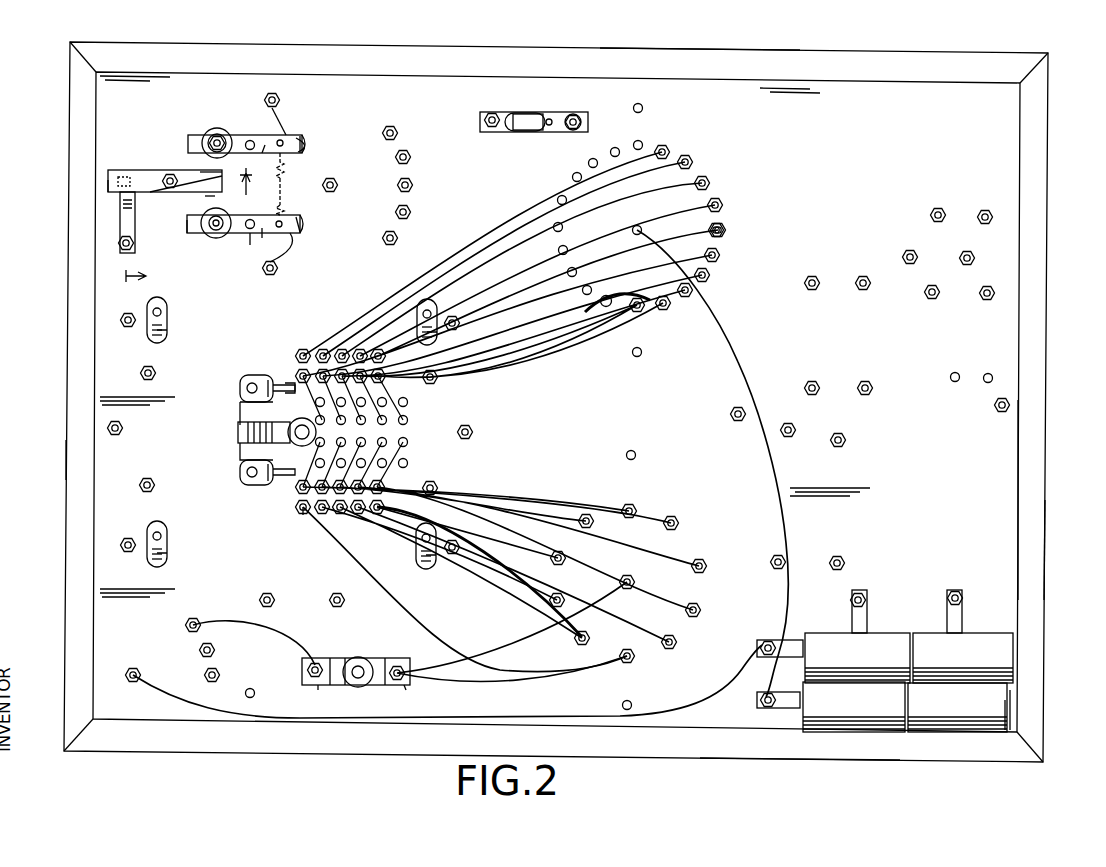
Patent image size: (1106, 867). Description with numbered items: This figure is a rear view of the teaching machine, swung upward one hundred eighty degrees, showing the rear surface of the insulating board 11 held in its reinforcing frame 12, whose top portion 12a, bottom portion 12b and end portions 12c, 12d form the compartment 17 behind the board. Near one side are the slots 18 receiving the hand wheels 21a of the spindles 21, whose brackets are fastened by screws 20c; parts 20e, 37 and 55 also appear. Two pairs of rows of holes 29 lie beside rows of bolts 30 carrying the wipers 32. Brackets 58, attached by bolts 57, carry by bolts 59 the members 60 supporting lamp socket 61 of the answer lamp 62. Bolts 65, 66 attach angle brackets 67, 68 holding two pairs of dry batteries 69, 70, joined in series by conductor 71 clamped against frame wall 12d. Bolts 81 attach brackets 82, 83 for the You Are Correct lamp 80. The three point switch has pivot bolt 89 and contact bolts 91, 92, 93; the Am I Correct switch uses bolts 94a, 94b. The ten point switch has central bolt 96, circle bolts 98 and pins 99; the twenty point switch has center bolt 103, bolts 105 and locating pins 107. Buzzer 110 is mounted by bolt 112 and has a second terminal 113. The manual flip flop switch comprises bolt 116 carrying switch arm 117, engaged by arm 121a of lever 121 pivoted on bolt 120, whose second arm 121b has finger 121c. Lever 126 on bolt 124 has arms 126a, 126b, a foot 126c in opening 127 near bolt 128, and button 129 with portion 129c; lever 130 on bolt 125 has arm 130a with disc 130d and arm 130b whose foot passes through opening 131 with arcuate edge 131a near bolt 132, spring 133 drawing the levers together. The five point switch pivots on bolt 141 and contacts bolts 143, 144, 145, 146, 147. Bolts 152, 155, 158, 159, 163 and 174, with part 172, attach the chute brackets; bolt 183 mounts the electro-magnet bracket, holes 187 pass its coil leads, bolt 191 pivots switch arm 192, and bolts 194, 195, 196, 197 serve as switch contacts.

The board 11 is at (1000, 512).
The reinforcing frame 12 is at (55, 315).
The top portion 12a is at (827, 753).
The bottom portion 12b is at (703, 58).
The end portion 12c is at (63, 456).
The end portion 12d is at (1023, 549).
The compartment 17 is at (197, 228).
The slots 18 is at (163, 315).
The screws 20c is at (128, 328).
The nut 20e is at (459, 320).
The spindle 21 is at (295, 341).
The hand wheels 21a is at (168, 334).
The holes 29 is at (408, 418).
The bolts 30 is at (300, 512).
The wipers 32 is at (420, 452).
The nut 37 is at (156, 372).
The nut 55 is at (122, 428).
The bolts 57 is at (250, 490).
The brackets 58 is at (266, 375).
The bolts 59 is at (287, 380).
The members 60 is at (240, 408).
The lamp socket 61 is at (240, 447).
The lamp 62 is at (295, 420).
The bolts 65 is at (866, 597).
The bolts 66 is at (762, 640).
The angle-shaped brackets 67 is at (868, 618).
The angle-shaped brackets 68 is at (790, 640).
The dry batteries 69 is at (875, 670).
The dry batteries 70 is at (872, 720).
The conductor 71 is at (1015, 683).
The lamp 80 is at (370, 648).
The bolts 81 is at (316, 662).
The bracket 82 is at (317, 686).
The bracket 83 is at (404, 686).
The bolt 89 is at (134, 668).
The bolt 91 is at (196, 618).
The bolt 92 is at (214, 650).
The bolt 93 is at (219, 675).
The bolt 94a is at (272, 594).
The bolt 94b is at (337, 594).
The central bolt 96 is at (635, 582).
The bolts 98 is at (678, 520).
The pins 99 is at (636, 453).
The center bolt 103 is at (633, 231).
The bolts 105 is at (724, 229).
The locating pins 107 is at (643, 108).
The buzzer 110 is at (562, 106).
The bolt 112 is at (493, 114).
The binding post 113 is at (570, 129).
The bolt 116 is at (134, 243).
The switch arm 117 is at (133, 218).
The bolt 120 is at (170, 175).
The switch lever 121 is at (144, 158).
The arm 121a is at (108, 182).
The second arm 121b is at (215, 172).
The finger 121c is at (183, 193).
The bolt 124 is at (250, 240).
The bolt 125 is at (250, 140).
The lever 126 is at (236, 240).
The arm 126a is at (190, 233).
The arm 126b is at (263, 238).
The foot 126c is at (304, 225).
The opening 127 is at (293, 250).
The bolt 128 is at (280, 270).
The insulated disc 129 is at (218, 204).
The bar end 129c is at (328, 133).
The lever 130 is at (262, 110).
The arm 130a is at (203, 135).
The arm 130b is at (241, 157).
The insulating disc 130d is at (210, 130).
The opening 131 is at (292, 132).
The arcuate edge 131a is at (305, 148).
The bolt 132 is at (278, 100).
The tension spring 133 is at (281, 200).
The bolt 141 is at (337, 183).
The bolt 143 is at (398, 238).
The bolt 144 is at (411, 212).
The bolt 145 is at (413, 185).
The bolt 146 is at (411, 157).
The bolt 147 is at (398, 133).
The bolts 152 is at (770, 563).
The bolt 155 is at (734, 420).
The bolt 158 is at (824, 372).
The bolt 159 is at (884, 372).
The bolt 163 is at (790, 438).
The nut 172 is at (846, 443).
The bolts 174 is at (808, 278).
The bolt 183 is at (1000, 412).
The holes 187 is at (987, 384).
The bolt 191 is at (988, 301).
The switch arm 192 is at (933, 300).
The bolt 194 is at (1002, 182).
The bolt 195 is at (932, 212).
The bolt 196 is at (974, 257).
The bolt 197 is at (917, 256).